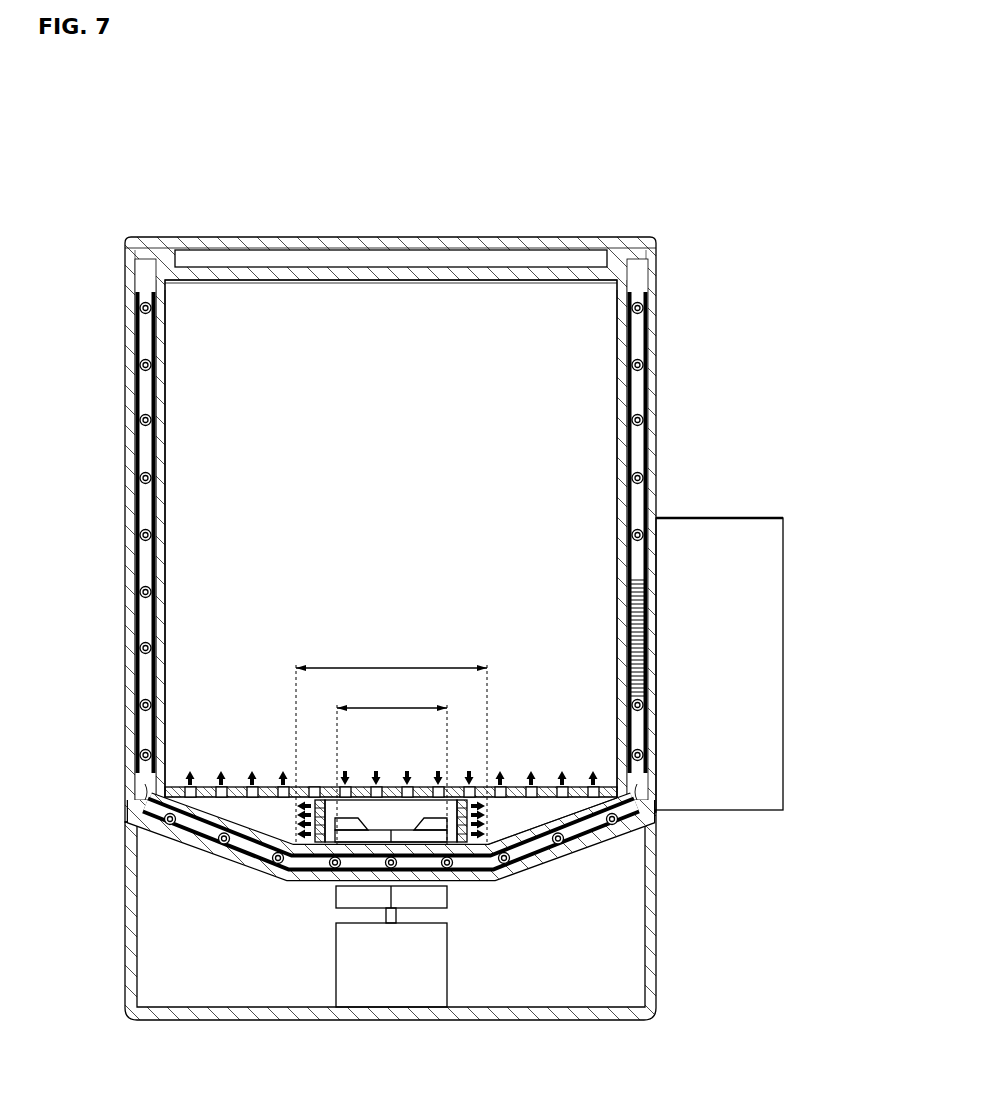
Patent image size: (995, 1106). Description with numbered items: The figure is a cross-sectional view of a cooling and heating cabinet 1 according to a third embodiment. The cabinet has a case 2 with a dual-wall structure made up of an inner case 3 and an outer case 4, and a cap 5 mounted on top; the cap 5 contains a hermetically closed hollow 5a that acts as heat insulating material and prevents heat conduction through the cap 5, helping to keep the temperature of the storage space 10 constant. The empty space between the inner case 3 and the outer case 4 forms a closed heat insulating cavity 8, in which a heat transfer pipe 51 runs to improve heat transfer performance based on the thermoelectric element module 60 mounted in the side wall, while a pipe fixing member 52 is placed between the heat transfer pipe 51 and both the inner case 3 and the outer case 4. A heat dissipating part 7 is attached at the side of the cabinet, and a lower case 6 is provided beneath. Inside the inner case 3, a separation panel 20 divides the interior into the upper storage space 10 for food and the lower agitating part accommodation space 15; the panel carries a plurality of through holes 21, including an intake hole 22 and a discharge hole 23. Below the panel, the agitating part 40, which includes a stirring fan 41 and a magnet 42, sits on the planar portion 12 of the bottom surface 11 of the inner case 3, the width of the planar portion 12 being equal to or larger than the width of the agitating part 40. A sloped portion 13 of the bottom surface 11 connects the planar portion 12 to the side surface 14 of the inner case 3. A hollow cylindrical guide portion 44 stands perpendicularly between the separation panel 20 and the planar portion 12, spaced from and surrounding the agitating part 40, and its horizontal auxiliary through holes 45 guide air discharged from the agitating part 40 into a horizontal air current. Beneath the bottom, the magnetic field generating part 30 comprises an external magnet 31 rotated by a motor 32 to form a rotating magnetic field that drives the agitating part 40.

The cooling and heating cabinet 1 is at (596, 166).
The case 2 is at (73, 392).
The inner case 3 is at (160, 410).
The outer case 4 is at (130, 432).
The cap 5 is at (409, 246).
The hollow 5a is at (317, 252).
The lower case 6 is at (125, 918).
The heat dissipating part 7 is at (755, 533).
The heat insulating cavity 8 is at (148, 792).
The storage space 10 is at (402, 440).
The bottom surface 11 is at (320, 935).
The planar portion 12 is at (300, 847).
The sloped portion 13 is at (243, 868).
The side surface 14 is at (165, 505).
The agitating part accommodation space 15 is at (536, 811).
The separation panel 20 is at (473, 779).
The through holes 21 is at (280, 706).
The intake hole 22 is at (345, 786).
The discharge hole 23 is at (222, 785).
The magnetic field generating part 30 is at (510, 905).
The external magnet 31 is at (447, 897).
The motor 32 is at (447, 963).
The agitating part 40 is at (415, 808).
The stirring fan 41 is at (354, 827).
The magnet 42 is at (433, 838).
The guide portion 44 is at (480, 820).
The auxiliary through holes 45 is at (318, 820).
The heat transfer pipe 51 is at (641, 308).
The pipe fixing member 52 is at (650, 330).
The thermoelectric element module 60 is at (656, 638).